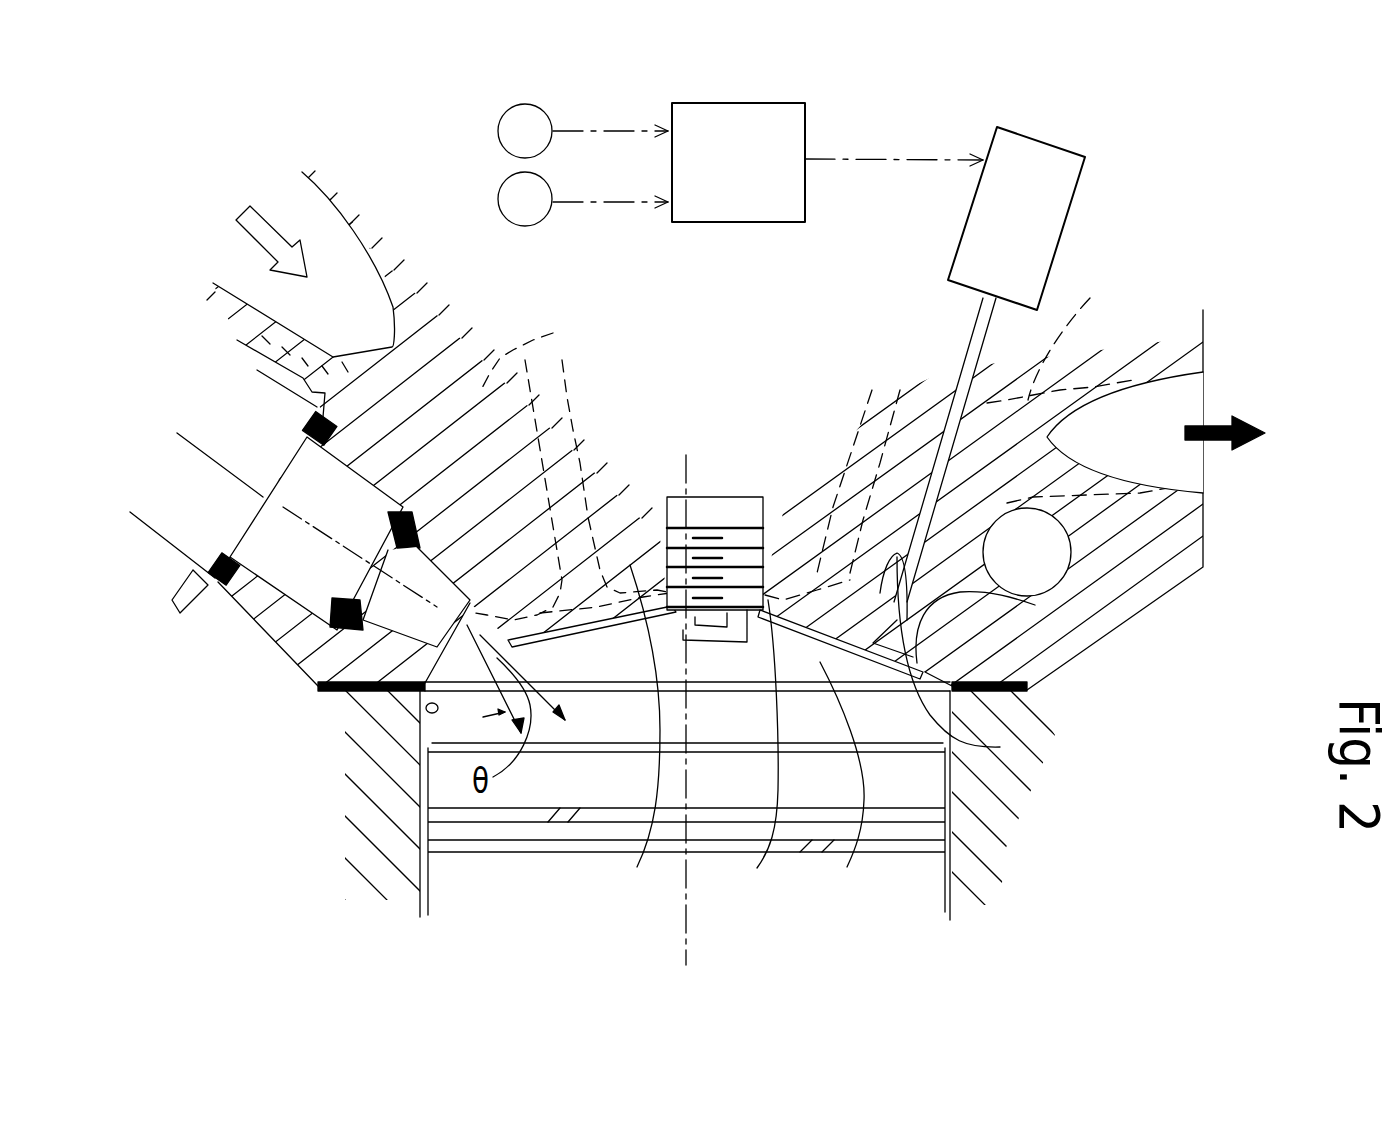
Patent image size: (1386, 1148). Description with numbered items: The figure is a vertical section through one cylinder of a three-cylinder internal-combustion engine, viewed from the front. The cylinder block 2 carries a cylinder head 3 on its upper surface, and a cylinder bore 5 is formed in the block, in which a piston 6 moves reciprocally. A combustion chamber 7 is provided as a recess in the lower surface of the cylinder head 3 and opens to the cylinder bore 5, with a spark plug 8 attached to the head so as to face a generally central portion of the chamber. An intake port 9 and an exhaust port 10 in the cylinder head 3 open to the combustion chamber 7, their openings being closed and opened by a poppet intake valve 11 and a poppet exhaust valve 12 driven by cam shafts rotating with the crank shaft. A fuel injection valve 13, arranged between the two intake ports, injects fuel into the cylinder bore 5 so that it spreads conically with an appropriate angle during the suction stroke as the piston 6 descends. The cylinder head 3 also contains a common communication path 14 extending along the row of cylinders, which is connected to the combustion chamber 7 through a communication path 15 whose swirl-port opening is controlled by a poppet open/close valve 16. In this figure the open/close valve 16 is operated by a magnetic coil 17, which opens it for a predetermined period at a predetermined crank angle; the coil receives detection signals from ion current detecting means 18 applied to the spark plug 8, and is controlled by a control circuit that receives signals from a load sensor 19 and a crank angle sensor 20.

The cylinder block 2 is at (328, 797).
The cylinder head 3 is at (427, 223).
The cylinder bore 5 is at (425, 708).
The piston 6 is at (620, 795).
The combustion chamber 7 is at (842, 782).
The spark plug 8 is at (723, 527).
The intake port 9 is at (573, 478).
The exhaust port 10 is at (965, 474).
The poppet intake valve 11 is at (632, 734).
The poppet exhaust valve 12 is at (746, 751).
The fuel injection valve 13 is at (297, 570).
The common communication path 14 is at (1060, 565).
The communication path 15 is at (940, 590).
The poppet open/close valve 16 is at (1000, 747).
The magnetic coil 17 is at (752, 133).
The ion current detecting means 18 is at (1050, 180).
The load sensor 19 is at (520, 117).
The crank angle sensor 20 is at (523, 213).